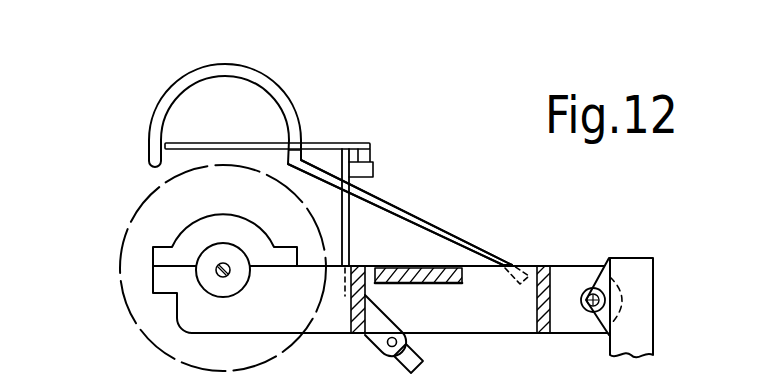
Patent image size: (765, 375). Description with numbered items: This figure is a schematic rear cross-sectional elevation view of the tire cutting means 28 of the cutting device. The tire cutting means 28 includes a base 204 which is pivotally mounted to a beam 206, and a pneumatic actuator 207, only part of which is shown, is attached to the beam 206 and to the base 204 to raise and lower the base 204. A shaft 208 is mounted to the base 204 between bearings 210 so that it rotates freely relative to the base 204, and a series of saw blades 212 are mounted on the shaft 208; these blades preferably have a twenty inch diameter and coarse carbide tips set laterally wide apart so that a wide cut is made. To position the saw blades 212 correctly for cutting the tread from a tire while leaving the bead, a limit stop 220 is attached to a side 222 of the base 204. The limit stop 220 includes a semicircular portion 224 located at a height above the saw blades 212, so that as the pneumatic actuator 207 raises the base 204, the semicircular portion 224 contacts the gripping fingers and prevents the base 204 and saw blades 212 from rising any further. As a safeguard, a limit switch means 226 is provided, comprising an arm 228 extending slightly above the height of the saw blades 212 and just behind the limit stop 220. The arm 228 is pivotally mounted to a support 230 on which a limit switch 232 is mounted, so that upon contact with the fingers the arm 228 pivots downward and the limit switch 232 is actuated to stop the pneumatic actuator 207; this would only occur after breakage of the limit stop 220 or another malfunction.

The tire cutting means 28 is at (446, 202).
The base 204 is at (560, 258).
The beam 206 is at (656, 293).
The pneumatic actuator 207 is at (424, 358).
The shaft 208 is at (229, 276).
The bearings 210 is at (200, 262).
The saw blades 212 is at (140, 198).
The limit stop 220 is at (389, 198).
The side 222 is at (513, 323).
The semicircular portion 224 is at (258, 64).
The limit switch means 226 is at (329, 124).
The arm 228 is at (199, 142).
The support 230 is at (348, 238).
The limit switch 232 is at (379, 171).